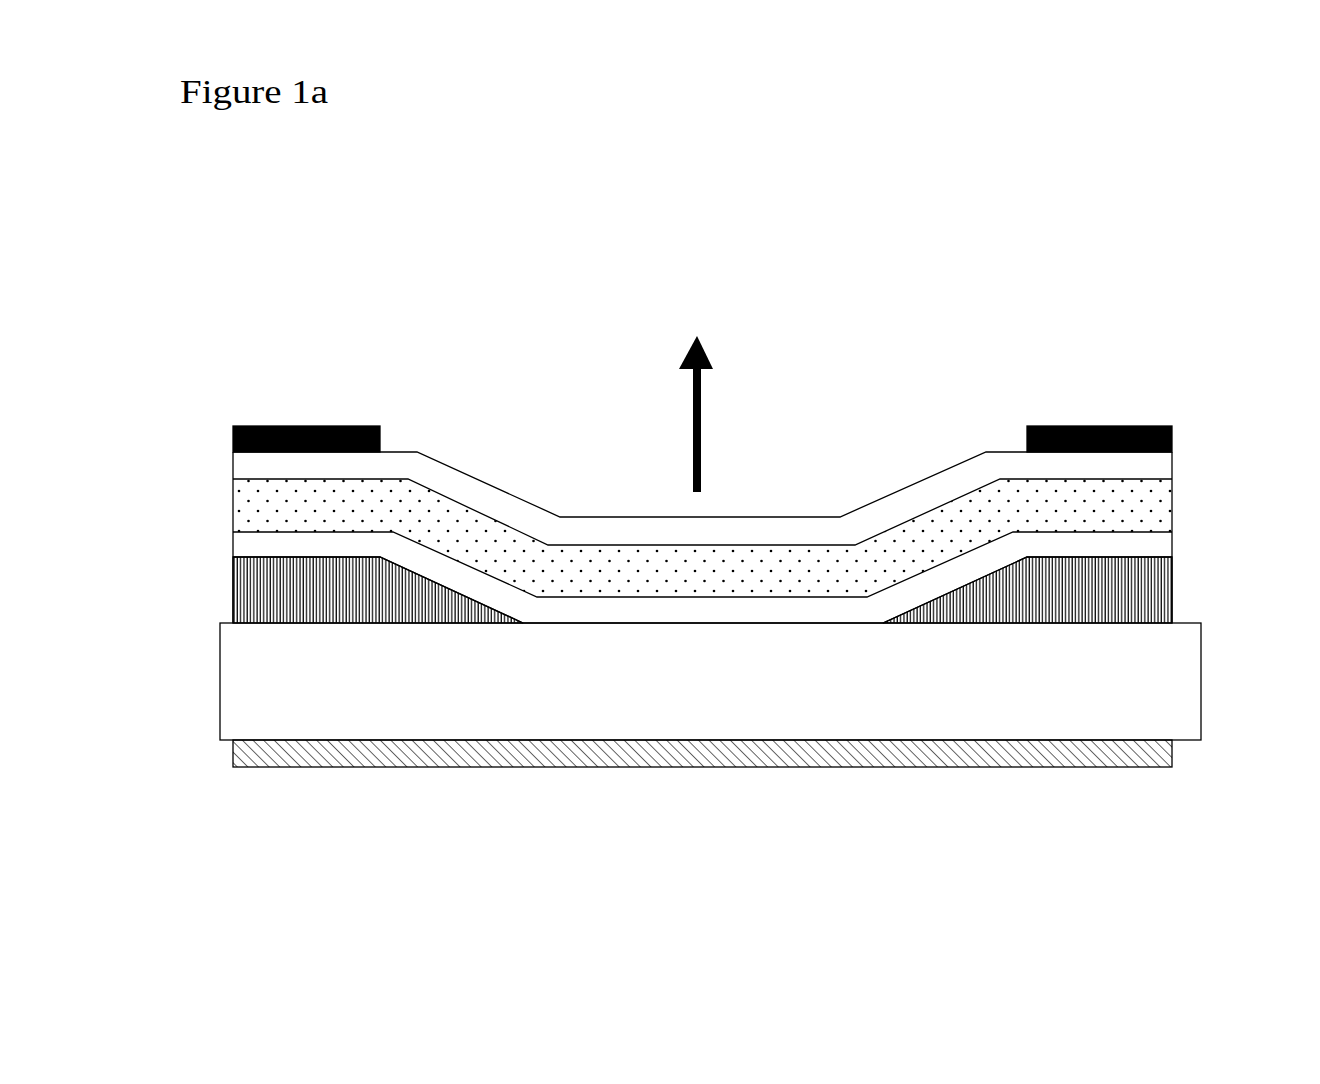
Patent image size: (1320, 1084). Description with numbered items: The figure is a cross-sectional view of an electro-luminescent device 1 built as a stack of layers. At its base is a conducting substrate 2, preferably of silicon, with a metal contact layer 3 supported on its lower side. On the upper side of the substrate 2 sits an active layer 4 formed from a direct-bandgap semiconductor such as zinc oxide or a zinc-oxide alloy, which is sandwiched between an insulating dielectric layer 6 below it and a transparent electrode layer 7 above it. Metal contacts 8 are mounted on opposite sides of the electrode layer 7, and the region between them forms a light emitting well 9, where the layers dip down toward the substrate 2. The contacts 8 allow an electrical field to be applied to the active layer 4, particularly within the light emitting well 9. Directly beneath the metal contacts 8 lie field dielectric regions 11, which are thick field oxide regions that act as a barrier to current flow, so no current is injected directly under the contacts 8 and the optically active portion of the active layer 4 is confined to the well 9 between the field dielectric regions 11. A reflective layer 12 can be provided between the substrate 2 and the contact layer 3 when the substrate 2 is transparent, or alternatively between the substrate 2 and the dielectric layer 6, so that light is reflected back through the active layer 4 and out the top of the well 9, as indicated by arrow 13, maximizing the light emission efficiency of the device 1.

The electro-luminescent device 1 is at (859, 275).
The conducting substrate 2 is at (235, 722).
The metal contact layer 3 is at (1128, 770).
The active layer 4 is at (250, 498).
The insulating dielectric layer 6 is at (1173, 542).
The transparent electrode layer 7 is at (442, 485).
The metal contacts 8 is at (313, 425).
The light emitting well 9 is at (756, 513).
The field dielectric regions 11 is at (267, 588).
The reflective layer 12 is at (1128, 737).
The arrow 13 is at (693, 423).